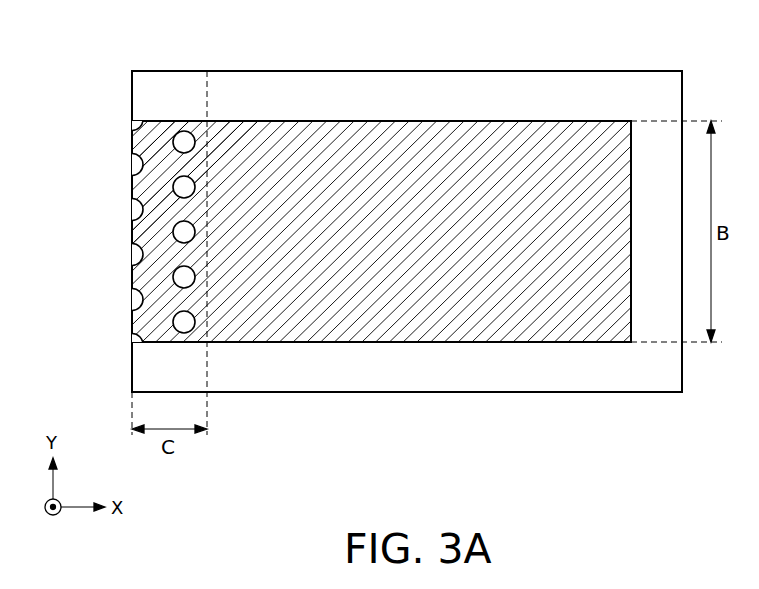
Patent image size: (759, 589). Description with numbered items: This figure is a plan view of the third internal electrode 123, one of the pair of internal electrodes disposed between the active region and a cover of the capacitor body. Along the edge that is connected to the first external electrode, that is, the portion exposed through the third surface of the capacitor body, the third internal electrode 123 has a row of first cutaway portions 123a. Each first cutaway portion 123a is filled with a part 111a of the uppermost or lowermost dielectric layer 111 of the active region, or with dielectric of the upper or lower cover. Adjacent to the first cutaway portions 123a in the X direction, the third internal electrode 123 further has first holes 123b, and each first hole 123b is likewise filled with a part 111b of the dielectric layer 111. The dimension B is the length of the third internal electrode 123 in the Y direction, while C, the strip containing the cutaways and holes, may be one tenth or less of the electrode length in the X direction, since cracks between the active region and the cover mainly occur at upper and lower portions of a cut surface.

The dielectric layer 111 is at (456, 387).
The part of the dielectric layer 111a is at (131, 164).
The part of the dielectric layer 111b is at (185, 130).
The third internal electrode 123 is at (334, 318).
The first cutaway portion 123a is at (142, 231).
The first hole 123b is at (172, 133).